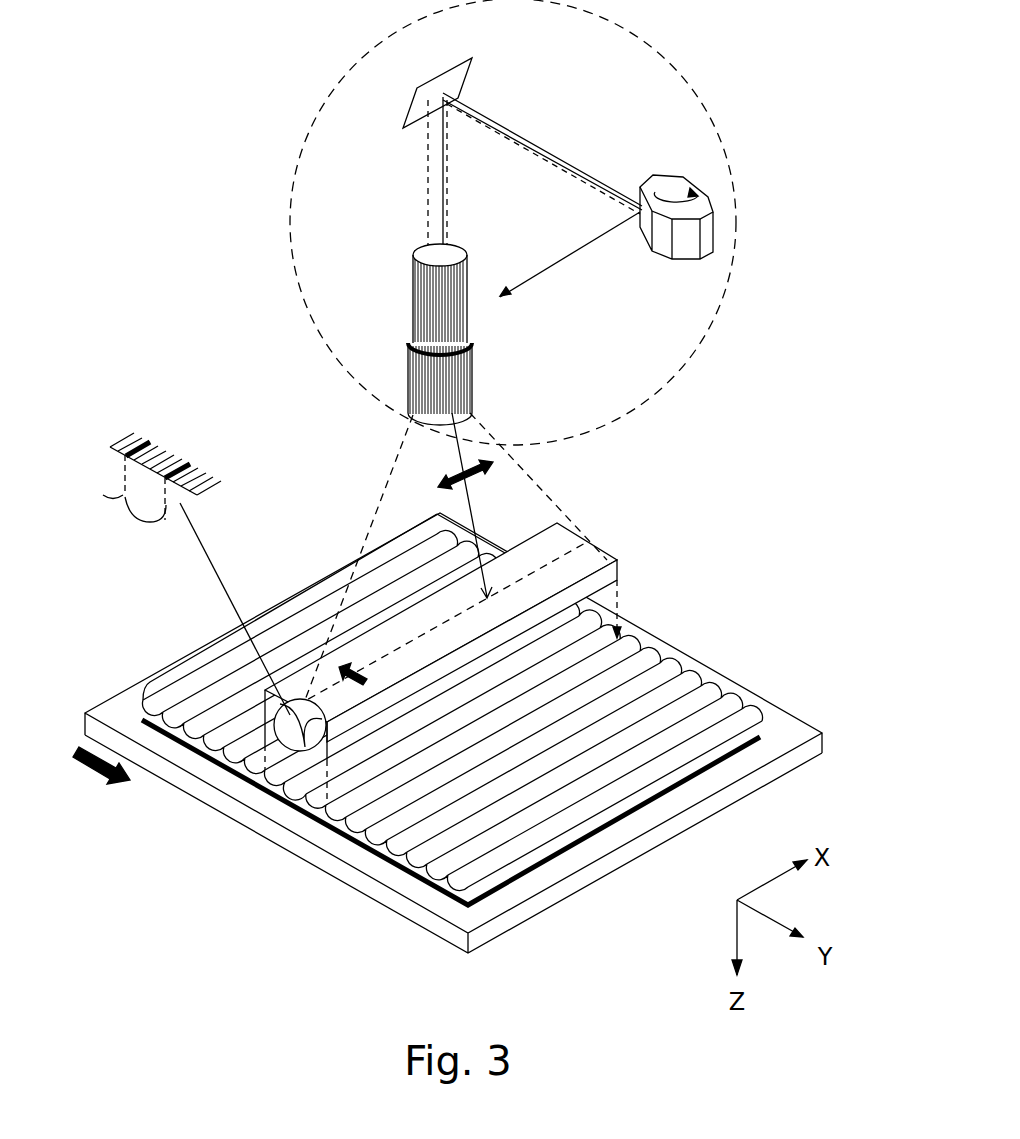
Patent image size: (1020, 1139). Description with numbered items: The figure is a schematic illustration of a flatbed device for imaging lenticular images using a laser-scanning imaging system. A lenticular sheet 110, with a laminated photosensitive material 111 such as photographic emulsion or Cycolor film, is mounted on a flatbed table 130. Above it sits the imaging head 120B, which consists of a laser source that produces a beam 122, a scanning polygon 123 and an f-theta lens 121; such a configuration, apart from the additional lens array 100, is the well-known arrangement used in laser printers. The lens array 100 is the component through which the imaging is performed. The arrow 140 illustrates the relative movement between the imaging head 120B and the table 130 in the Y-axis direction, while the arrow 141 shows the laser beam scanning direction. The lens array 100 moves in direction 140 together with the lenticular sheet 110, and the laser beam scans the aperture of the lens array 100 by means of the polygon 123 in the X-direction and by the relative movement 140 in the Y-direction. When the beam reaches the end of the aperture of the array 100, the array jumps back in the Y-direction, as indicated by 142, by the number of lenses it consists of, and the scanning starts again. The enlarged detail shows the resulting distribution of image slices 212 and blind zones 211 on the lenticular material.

The lens array 100 is at (597, 562).
The lenticular sheet 110 is at (677, 690).
The photosensitive material 111 is at (525, 877).
The imaging head 120B is at (677, 383).
The f-theta lens 121 is at (423, 315).
The beam 122 is at (567, 260).
The scanning polygon 123 is at (672, 182).
The flatbed table 130 is at (365, 882).
The relative movement 140 is at (103, 792).
The laser beam scanning direction 141 is at (445, 478).
The jump back movement 142 is at (347, 682).
The blind zones 211 is at (202, 452).
The image slices 212 is at (140, 436).